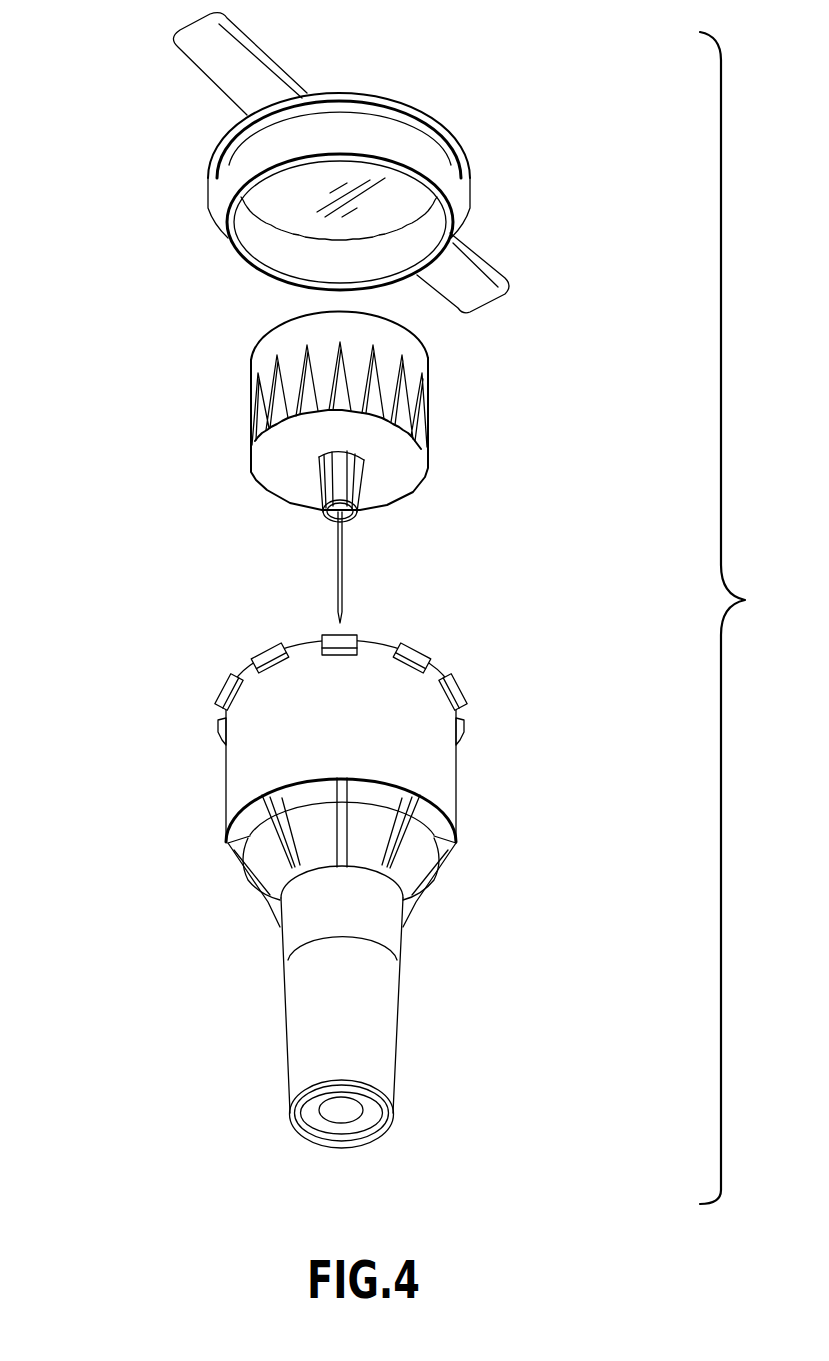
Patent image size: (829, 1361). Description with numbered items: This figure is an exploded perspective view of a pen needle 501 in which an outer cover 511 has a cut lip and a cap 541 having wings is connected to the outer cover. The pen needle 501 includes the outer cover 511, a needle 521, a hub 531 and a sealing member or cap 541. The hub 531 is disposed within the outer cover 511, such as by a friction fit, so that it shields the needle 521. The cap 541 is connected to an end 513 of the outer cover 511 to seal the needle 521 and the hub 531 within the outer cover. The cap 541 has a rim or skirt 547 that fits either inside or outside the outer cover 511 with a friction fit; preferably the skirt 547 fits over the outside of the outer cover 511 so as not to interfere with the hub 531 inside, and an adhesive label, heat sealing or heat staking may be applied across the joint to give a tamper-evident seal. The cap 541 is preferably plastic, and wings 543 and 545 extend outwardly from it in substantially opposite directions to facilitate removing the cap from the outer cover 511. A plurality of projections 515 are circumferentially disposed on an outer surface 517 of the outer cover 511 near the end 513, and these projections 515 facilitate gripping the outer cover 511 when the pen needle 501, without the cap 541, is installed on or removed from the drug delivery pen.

The pen needle 501 is at (226, 537).
The outer cover 511 is at (458, 787).
The end of the outer cover 513 is at (438, 668).
The projections 515 is at (310, 638).
The outer surface of the outer cover 517 is at (226, 780).
The needle 521 is at (345, 563).
The hub 531 is at (430, 387).
The cap 541 is at (463, 58).
The wing 543 is at (497, 277).
The wing 545 is at (190, 49).
The skirt 547 is at (255, 265).